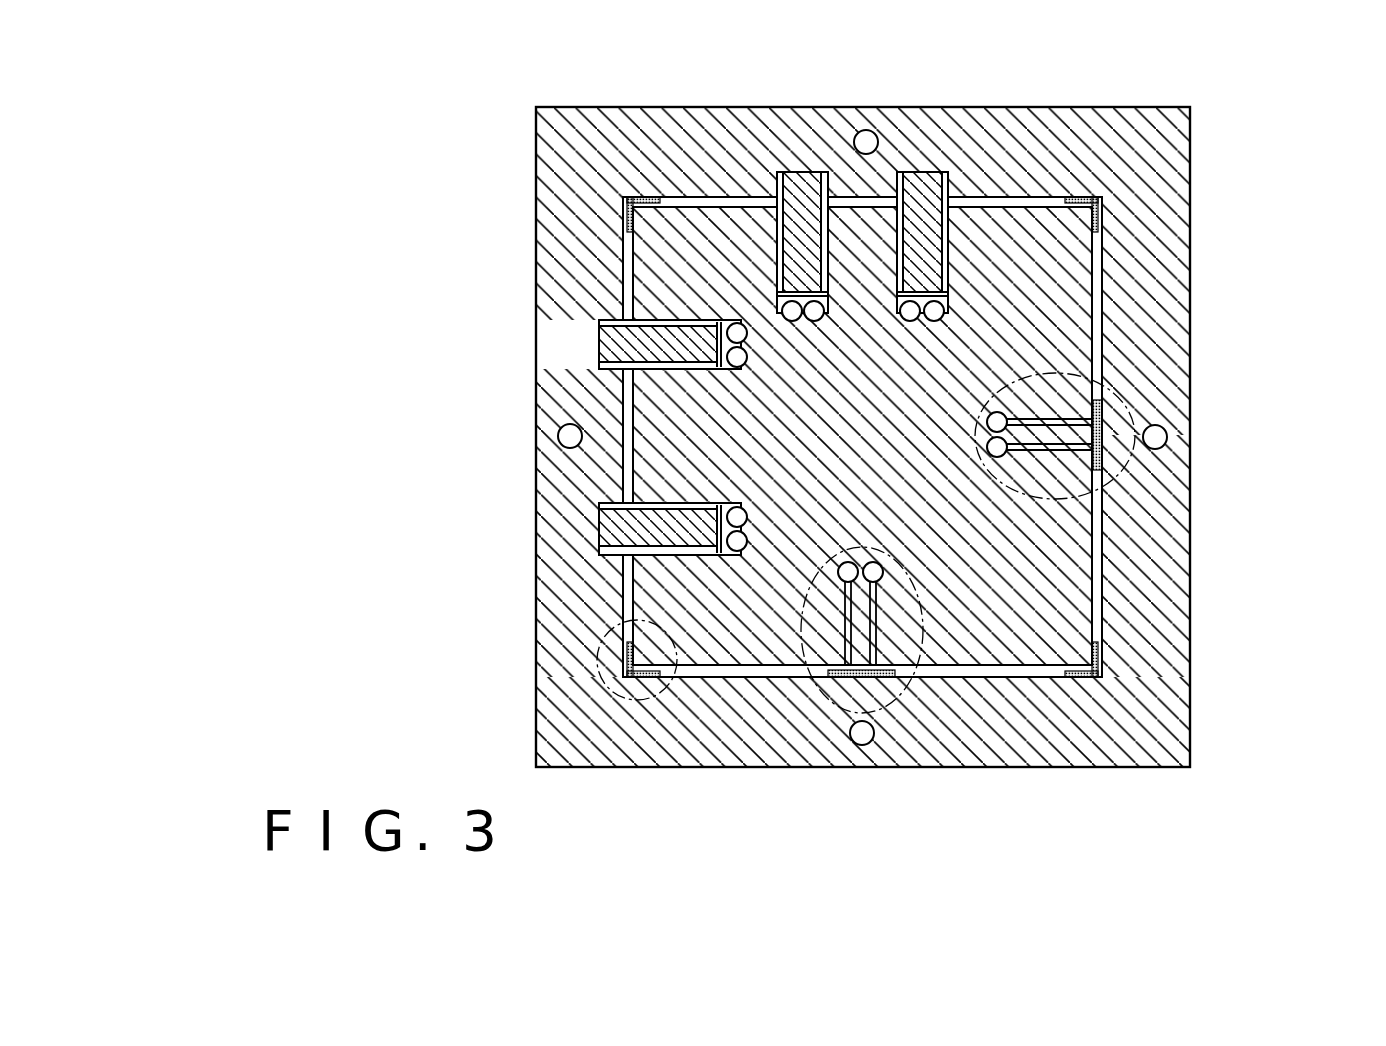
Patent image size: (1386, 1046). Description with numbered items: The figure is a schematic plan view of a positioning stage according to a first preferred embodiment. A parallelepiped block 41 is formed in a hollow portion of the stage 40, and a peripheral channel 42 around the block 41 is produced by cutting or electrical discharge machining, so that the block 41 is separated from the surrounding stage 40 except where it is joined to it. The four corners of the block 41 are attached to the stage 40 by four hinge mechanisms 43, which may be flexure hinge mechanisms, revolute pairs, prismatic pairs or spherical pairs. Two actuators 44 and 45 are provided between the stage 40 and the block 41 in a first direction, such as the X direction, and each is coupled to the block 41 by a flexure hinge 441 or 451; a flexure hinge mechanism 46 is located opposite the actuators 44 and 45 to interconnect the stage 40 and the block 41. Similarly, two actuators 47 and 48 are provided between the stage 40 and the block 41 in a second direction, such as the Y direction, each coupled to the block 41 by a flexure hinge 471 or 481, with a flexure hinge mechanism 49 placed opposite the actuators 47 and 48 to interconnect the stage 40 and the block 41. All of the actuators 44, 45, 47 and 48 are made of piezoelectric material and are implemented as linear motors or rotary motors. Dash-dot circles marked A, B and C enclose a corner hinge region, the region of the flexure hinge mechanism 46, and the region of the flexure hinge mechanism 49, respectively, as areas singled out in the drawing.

The stage 40 is at (1058, 145).
The parallelepiped block 41 is at (1096, 315).
The peripheral channel 42 is at (1094, 555).
The hinge mechanisms 43 is at (638, 197).
The actuator 44 is at (600, 335).
The flexure hinge 441 is at (722, 322).
The actuator 45 is at (600, 520).
The flexure hinge 451 is at (725, 556).
The flexure hinge mechanism 46 is at (1096, 402).
The actuator 47 is at (797, 172).
The flexure hinge 471 is at (823, 296).
The actuator 48 is at (932, 172).
The flexure hinge 481 is at (947, 296).
The flexure hinge mechanism 49 is at (830, 677).
The detail region A is at (600, 650).
The detail region B is at (1120, 478).
The detail region C is at (905, 720).